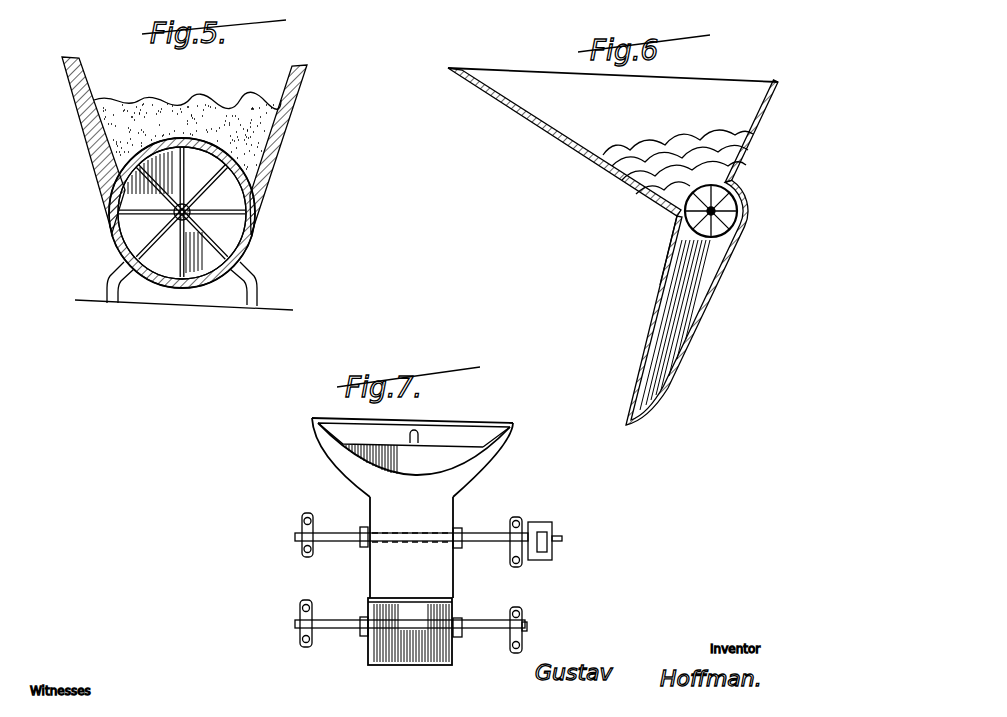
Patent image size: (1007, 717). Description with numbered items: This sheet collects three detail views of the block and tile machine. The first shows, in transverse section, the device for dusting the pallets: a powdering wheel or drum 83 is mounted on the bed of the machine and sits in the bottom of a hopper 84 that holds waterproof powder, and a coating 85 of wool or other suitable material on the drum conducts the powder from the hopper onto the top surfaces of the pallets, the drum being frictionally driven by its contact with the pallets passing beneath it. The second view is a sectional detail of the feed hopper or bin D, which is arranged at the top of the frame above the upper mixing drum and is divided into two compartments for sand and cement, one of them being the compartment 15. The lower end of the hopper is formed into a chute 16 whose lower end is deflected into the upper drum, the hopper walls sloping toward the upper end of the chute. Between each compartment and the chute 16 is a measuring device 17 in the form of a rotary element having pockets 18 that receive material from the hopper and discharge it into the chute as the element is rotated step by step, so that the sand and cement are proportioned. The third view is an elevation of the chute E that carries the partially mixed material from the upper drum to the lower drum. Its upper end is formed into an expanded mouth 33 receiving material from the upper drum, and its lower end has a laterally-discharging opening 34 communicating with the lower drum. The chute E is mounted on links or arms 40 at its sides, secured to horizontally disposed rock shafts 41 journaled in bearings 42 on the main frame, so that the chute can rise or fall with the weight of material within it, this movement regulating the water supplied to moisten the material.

In FIG. 5, the powdering wheel or drum 83 is at (252, 252).
In FIG. 5, the hopper 84 is at (280, 162).
In FIG. 5, the coating 85 is at (253, 227).
In FIG. 6, the hopper or bin D is at (613, 142).
In FIG. 6, the compartment 15 is at (678, 150).
In FIG. 6, the chute 16 is at (718, 285).
In FIG. 6, the measuring device 17 is at (675, 214).
In FIG. 6, the pockets 18 is at (709, 228).
In FIG. 7, the expanded mouth 33 is at (455, 449).
In FIG. 7, the laterally-discharging opening 34 is at (428, 663).
In FIG. 7, the links or arms 40 is at (362, 548).
In FIG. 7, the rock shafts 41 is at (481, 534).
In FIG. 7, the bearings 42 is at (307, 558).
In FIG. 7, the chute E is at (424, 547).